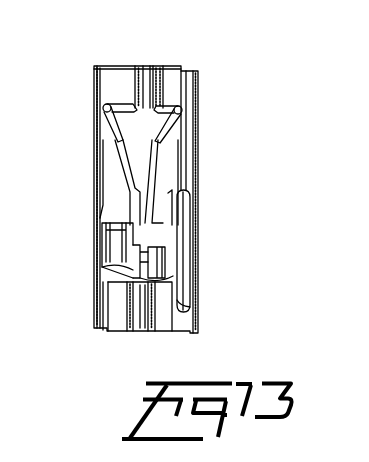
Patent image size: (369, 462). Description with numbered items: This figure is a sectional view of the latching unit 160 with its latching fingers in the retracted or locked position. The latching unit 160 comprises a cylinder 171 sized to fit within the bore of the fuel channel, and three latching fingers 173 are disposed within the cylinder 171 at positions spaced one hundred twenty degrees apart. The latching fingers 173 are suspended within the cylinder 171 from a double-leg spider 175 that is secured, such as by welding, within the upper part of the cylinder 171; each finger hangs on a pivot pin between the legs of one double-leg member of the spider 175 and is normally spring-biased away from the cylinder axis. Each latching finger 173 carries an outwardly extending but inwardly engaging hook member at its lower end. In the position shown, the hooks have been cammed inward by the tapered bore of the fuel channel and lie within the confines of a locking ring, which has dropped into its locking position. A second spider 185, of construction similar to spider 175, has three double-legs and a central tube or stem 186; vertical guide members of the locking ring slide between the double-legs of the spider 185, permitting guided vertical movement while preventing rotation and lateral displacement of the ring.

The latching unit 160 is at (225, 131).
The cylinder 171 is at (197, 176).
The latching fingers 173 is at (97, 246).
The double-leg spider 175 is at (137, 66).
The spider 185 is at (122, 333).
The central tube or stem 186 is at (142, 330).